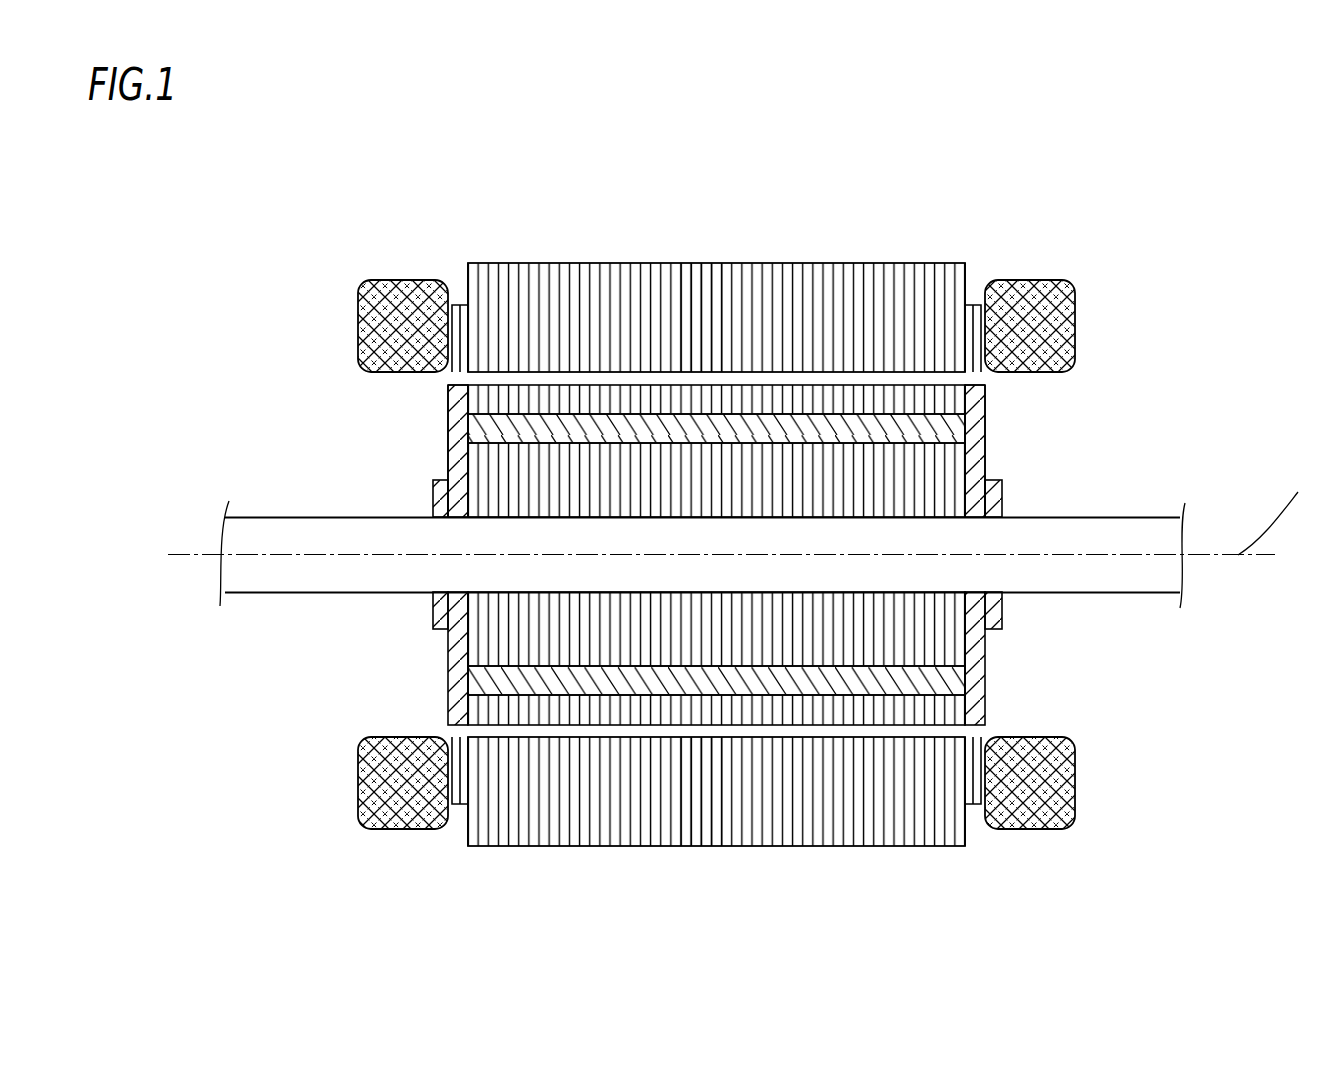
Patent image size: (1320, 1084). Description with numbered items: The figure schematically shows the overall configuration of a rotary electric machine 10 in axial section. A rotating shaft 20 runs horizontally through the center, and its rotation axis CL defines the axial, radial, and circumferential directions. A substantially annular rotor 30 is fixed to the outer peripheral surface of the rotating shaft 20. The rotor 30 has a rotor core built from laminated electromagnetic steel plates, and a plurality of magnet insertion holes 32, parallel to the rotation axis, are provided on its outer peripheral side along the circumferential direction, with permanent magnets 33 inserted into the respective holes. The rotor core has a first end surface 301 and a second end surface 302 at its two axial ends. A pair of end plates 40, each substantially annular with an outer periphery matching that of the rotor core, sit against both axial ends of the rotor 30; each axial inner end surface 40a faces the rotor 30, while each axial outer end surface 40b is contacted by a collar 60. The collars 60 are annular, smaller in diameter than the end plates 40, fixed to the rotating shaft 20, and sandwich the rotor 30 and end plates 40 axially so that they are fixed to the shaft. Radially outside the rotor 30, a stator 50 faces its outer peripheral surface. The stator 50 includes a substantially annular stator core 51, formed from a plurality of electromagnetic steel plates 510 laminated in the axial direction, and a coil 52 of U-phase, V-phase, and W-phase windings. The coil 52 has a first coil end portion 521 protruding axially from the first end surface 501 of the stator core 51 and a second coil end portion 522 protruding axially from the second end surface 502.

The rotary electric machine 10 is at (1047, 130).
The rotating shaft 20 is at (1138, 523).
The rotor 30 is at (686, 560).
The first end surface 301 is at (985, 645).
The second end surface 302 is at (445, 632).
The magnet insertion holes 32 is at (448, 410).
The permanent magnets 33 is at (455, 428).
The end plates 40 is at (707, 517).
The axial inner end surface 40a is at (452, 388).
The axial outer end surface 40b is at (448, 468).
The stator 50 is at (709, 540).
The first end surface 501 is at (968, 268).
The second end surface 502 is at (466, 274).
The stator core 51 is at (709, 540).
The electromagnetic steel plates 510 is at (718, 263).
The coil 52 is at (718, 546).
The first coil end portion 521 is at (1078, 283).
The second coil end portion 522 is at (372, 283).
The collars 60 is at (433, 500).